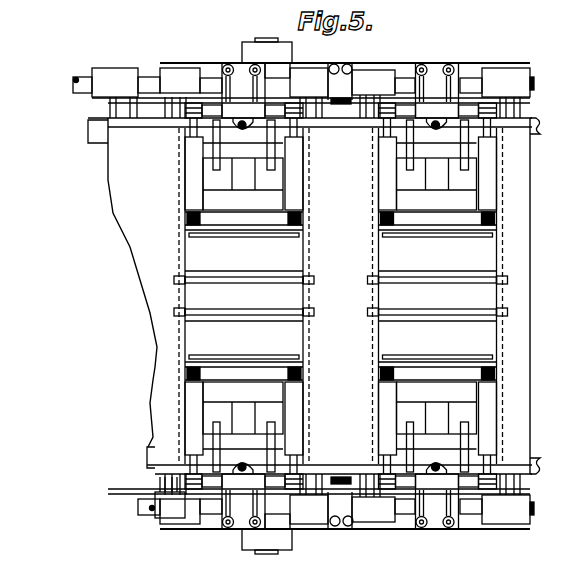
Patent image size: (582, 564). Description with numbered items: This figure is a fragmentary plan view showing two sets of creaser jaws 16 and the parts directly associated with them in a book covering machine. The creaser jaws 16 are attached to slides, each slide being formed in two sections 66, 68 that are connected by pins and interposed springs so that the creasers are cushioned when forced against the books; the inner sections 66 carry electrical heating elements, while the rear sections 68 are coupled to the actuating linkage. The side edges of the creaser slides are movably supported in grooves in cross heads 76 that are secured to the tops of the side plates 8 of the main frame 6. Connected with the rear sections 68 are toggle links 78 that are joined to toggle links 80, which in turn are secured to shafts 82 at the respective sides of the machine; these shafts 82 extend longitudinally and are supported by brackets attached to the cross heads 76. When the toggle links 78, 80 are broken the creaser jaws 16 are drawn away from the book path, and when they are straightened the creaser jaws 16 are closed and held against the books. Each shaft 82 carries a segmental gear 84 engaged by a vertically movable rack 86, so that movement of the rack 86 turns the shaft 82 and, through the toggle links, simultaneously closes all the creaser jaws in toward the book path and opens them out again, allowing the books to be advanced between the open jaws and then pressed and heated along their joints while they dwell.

The main frame 6 is at (80, 124).
The side plate 8 is at (538, 120).
The creaser jaw 16 is at (253, 281).
The inner section of creaser slide 66 is at (233, 259).
The rear section of creaser slide 68 is at (228, 208).
The cross head 76 is at (121, 200).
The toggle link 78 is at (202, 138).
The toggle link 80 is at (224, 98).
The shaft 82 is at (276, 80).
The segmental gear 84 is at (337, 528).
The rack 86 is at (342, 96).